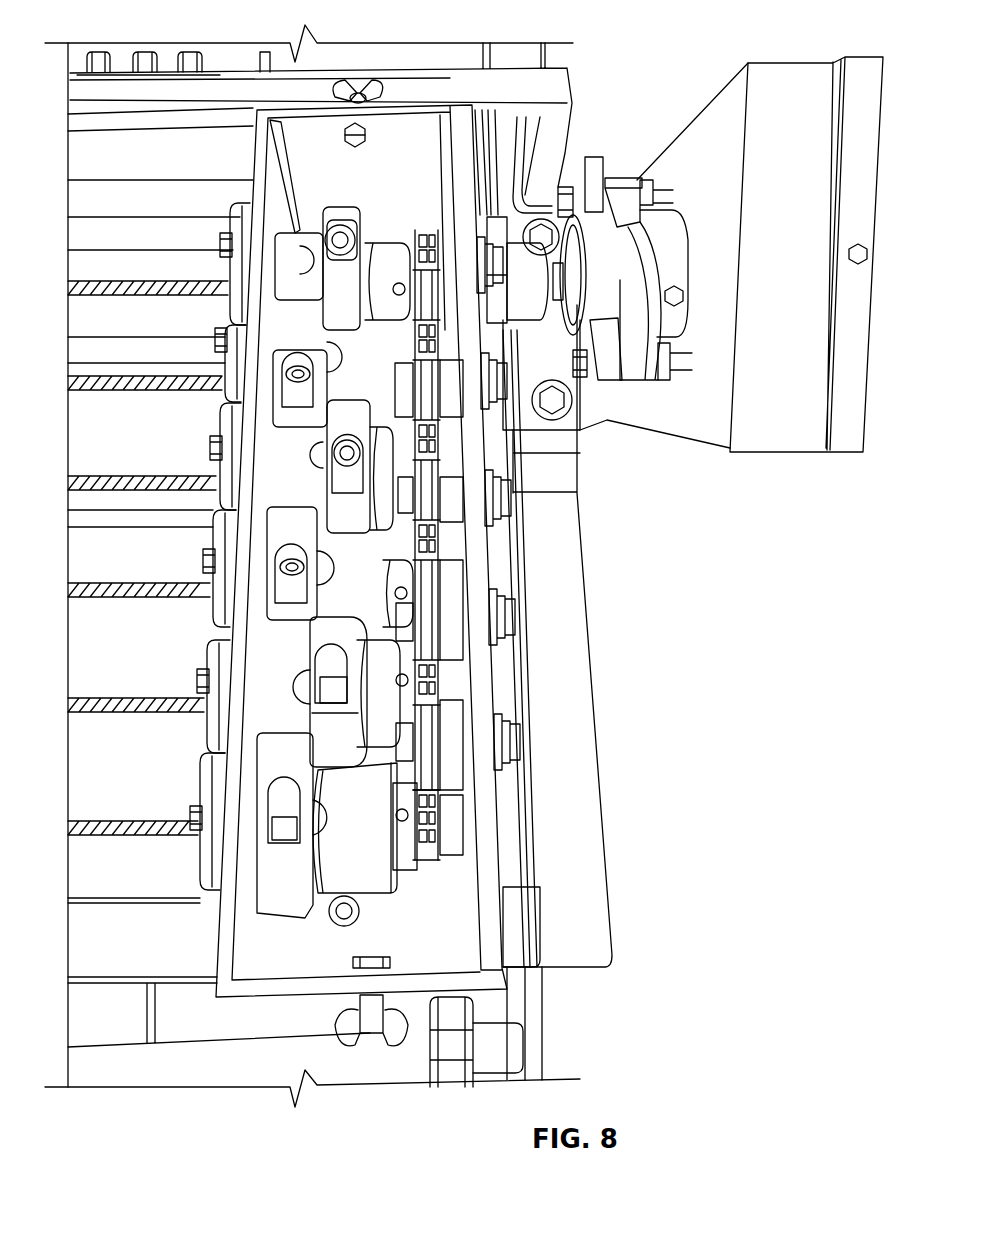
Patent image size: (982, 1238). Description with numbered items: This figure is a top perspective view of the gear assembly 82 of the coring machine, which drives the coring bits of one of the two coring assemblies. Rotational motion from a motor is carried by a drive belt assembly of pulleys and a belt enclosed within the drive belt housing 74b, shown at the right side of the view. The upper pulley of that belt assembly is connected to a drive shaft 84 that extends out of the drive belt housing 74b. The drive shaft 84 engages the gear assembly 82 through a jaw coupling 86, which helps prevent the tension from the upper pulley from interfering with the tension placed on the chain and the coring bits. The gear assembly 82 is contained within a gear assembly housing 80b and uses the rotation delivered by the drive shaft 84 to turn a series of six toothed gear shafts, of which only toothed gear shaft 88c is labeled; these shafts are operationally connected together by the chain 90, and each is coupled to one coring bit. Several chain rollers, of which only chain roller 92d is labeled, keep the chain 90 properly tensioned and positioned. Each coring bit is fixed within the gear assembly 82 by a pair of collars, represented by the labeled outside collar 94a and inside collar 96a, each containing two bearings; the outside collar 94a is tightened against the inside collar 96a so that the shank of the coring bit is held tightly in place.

The drive belt housing 74b is at (785, 140).
The gear assembly housing 80b is at (455, 118).
The gear assembly 82 is at (329, 69).
The drive shaft 84 is at (553, 295).
The jaw coupling 86 is at (520, 263).
The toothed gear shaft 88c is at (433, 437).
The chain 90 is at (440, 843).
The chain roller 92d is at (433, 768).
The outside collar 94a is at (345, 283).
The inside collar 96a is at (297, 235).